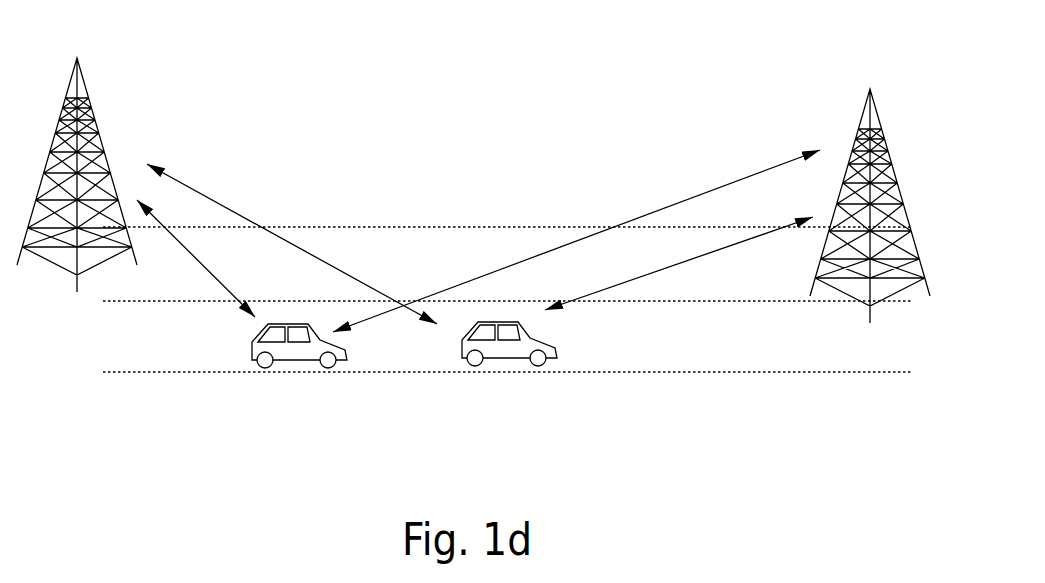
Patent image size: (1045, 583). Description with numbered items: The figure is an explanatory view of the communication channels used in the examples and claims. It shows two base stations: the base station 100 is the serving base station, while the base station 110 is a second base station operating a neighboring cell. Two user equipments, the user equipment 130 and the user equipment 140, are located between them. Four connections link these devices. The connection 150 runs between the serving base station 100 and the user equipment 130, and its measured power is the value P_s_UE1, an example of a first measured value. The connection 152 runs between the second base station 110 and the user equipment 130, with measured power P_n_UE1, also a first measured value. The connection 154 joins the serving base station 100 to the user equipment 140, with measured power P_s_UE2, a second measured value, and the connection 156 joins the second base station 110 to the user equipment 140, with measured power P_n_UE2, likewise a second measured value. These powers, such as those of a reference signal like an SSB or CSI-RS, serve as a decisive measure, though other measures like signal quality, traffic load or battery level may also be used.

The base station 100 is at (83, 79).
The base station 110 is at (862, 128).
The user equipment 130 is at (295, 360).
The user equipment 140 is at (538, 340).
The connection 150 is at (214, 277).
The connection 152 is at (743, 178).
The connection 154 is at (212, 199).
The connection 156 is at (655, 271).